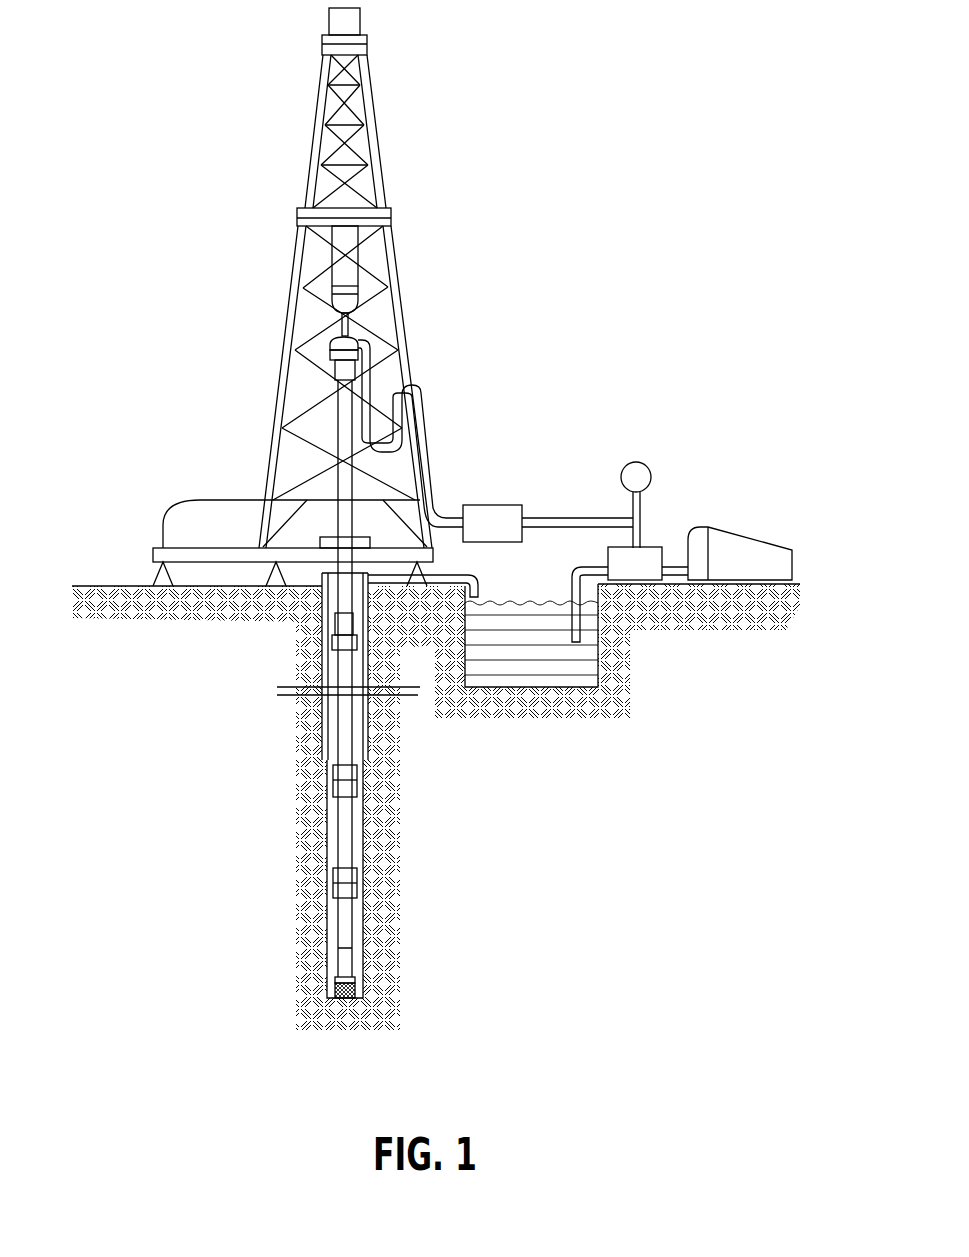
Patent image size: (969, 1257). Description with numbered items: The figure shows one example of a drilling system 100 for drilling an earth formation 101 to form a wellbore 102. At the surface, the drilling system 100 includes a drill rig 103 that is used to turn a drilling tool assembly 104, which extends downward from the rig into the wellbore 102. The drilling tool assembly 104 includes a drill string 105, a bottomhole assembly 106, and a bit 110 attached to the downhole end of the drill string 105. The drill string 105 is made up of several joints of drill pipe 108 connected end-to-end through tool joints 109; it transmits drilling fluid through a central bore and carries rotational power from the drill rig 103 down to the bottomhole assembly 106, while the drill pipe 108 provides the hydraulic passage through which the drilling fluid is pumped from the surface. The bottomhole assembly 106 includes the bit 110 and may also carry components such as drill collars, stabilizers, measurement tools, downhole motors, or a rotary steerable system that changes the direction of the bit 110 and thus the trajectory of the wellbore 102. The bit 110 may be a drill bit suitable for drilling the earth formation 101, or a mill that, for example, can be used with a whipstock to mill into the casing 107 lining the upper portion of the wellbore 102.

The drilling system 100 is at (742, 58).
The earth formation 101 is at (436, 807).
The wellbore 102 is at (367, 860).
The drill rig 103 is at (291, 307).
The drilling tool assembly 104 is at (378, 747).
The drill string 105 is at (273, 620).
The bottomhole assembly 106 is at (273, 900).
The casing 107 is at (370, 723).
The drill pipe 108 is at (353, 833).
The tool joints 109 is at (358, 790).
The bit 110 is at (360, 988).